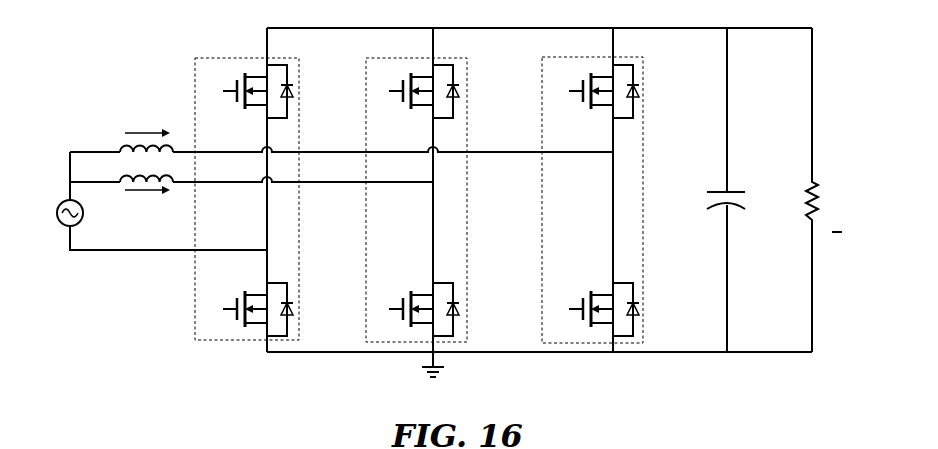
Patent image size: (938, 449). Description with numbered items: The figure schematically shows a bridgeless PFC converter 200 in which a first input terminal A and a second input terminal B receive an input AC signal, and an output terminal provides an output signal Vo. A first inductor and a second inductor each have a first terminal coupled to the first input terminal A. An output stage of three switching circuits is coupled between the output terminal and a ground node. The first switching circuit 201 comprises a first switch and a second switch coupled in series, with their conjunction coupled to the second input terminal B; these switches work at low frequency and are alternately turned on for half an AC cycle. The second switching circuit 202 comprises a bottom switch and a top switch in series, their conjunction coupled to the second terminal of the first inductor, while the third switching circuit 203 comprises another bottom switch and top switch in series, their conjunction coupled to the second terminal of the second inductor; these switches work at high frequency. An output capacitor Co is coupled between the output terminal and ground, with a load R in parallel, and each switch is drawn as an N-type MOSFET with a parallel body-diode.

The bridgeless PFC converter 200 is at (132, 40).
The first switching circuit 201 is at (192, 326).
The second switching circuit 202 is at (363, 279).
The third switching circuit 203 is at (538, 259).